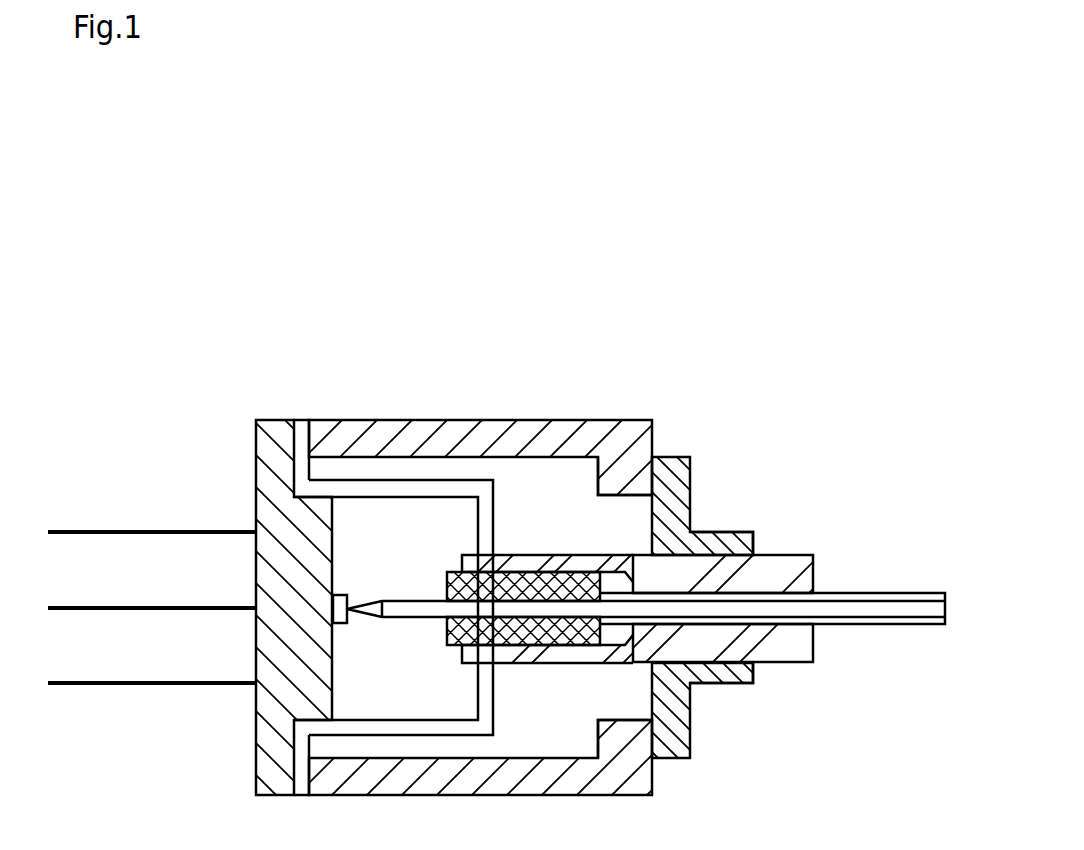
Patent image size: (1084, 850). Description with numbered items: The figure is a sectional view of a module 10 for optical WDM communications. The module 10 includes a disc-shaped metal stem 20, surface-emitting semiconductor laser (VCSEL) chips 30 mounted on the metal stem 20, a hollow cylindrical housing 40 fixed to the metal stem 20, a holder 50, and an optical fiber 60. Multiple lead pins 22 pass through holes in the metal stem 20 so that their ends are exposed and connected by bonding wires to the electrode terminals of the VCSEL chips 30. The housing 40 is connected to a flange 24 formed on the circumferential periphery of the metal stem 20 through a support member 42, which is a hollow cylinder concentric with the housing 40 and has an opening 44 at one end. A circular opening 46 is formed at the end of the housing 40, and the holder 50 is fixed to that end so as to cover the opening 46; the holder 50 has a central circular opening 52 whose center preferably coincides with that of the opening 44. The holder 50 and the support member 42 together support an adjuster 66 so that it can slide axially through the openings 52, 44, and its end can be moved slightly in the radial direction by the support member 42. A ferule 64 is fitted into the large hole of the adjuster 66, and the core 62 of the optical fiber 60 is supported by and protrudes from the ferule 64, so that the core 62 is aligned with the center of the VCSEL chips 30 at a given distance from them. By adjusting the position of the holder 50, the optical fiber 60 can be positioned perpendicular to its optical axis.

The module 10 is at (478, 287).
The metal stem 20 is at (265, 422).
The lead pins 22 is at (142, 530).
The flange 24 is at (297, 458).
The surface-emitting semiconductor laser (VCSEL) chips 30 is at (345, 625).
The housing 40 is at (440, 425).
The support member 42 is at (373, 485).
The opening 44 is at (497, 557).
The circular opening 46 is at (627, 493).
The holder 50 is at (690, 462).
The circular opening 52 is at (754, 555).
The optical fiber 60 is at (858, 593).
The core 62 is at (423, 610).
The ferule 64 is at (538, 663).
The adjuster 66 is at (813, 655).